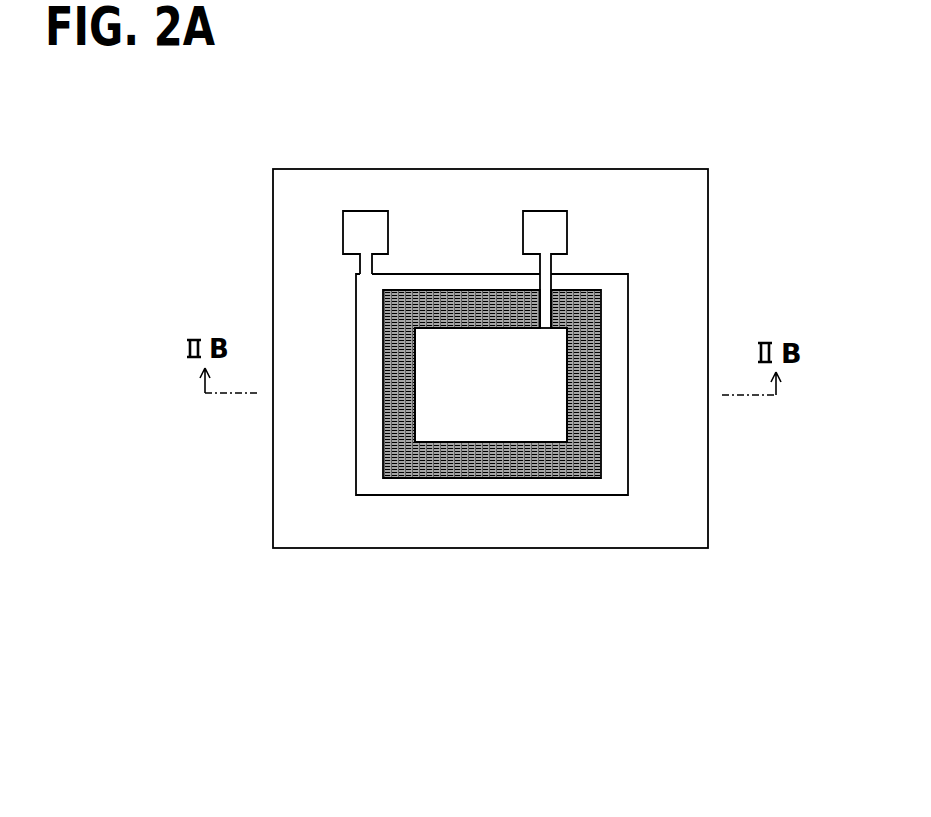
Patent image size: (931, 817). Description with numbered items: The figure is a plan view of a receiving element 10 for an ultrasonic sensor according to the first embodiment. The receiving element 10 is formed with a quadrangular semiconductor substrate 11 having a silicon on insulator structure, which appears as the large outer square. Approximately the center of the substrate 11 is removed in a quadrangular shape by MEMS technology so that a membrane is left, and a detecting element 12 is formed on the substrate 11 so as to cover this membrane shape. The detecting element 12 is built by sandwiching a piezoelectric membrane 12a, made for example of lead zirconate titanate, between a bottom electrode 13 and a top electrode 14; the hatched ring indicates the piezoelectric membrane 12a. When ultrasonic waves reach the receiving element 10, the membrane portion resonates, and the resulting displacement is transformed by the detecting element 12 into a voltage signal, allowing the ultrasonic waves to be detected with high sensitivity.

The receiving element 10 is at (694, 139).
The semiconductor substrate 11 is at (700, 448).
The detecting element 12 is at (415, 512).
The piezoelectric membrane 12a is at (535, 472).
The bottom electrode 13 is at (462, 283).
The top electrode 14 is at (548, 358).